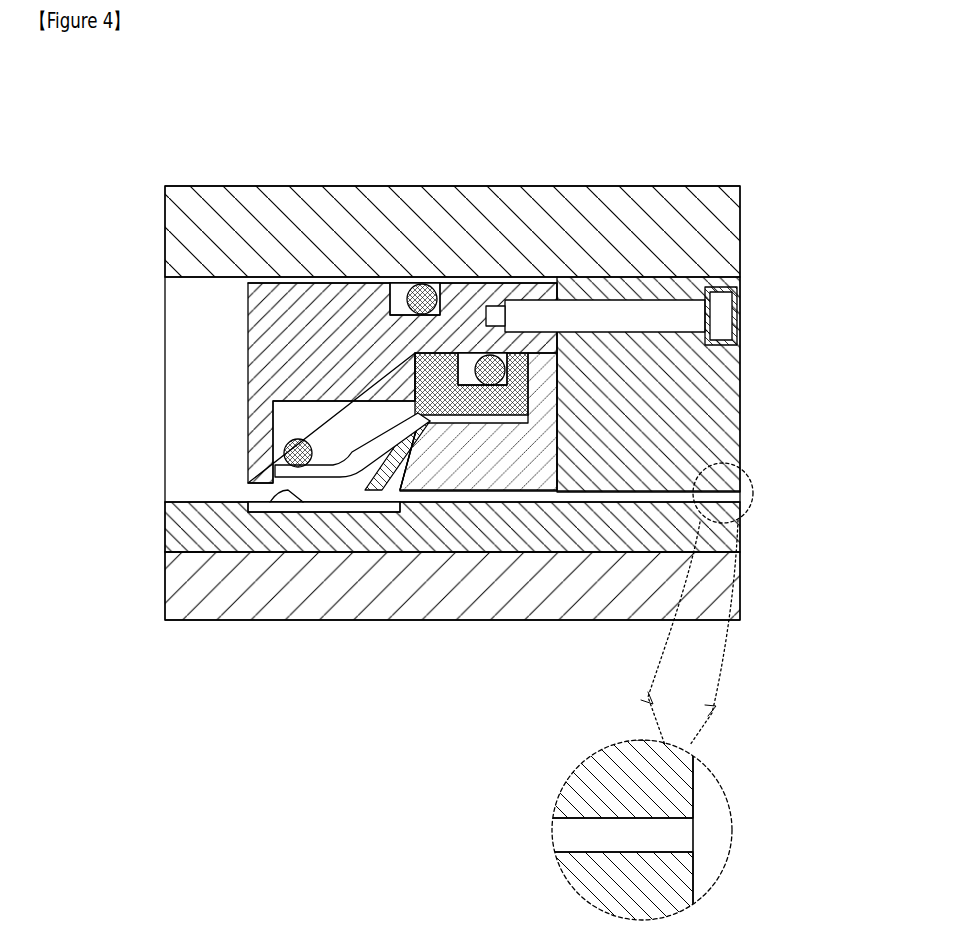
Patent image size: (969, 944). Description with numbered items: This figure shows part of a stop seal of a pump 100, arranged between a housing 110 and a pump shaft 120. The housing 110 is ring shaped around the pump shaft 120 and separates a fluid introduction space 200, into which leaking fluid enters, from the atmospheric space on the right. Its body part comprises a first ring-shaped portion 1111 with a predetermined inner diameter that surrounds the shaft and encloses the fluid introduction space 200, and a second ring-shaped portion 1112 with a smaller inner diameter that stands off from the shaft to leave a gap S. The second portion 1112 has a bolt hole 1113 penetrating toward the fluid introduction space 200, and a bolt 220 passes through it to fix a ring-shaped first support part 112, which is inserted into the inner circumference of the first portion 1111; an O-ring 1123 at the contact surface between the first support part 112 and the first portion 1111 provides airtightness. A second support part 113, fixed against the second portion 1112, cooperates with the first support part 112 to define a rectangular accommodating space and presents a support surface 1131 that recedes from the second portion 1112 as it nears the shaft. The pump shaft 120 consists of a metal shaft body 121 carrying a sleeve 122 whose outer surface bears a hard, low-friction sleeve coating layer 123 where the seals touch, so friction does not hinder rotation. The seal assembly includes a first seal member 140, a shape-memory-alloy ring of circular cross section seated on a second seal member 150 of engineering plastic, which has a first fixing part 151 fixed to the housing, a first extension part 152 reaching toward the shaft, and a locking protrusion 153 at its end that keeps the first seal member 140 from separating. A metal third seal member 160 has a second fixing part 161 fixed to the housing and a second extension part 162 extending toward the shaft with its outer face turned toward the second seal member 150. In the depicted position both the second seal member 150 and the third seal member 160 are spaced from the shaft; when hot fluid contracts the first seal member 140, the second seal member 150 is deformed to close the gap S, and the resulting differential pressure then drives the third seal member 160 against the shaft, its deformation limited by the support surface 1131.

The pump 100 is at (747, 157).
The housing 110 is at (740, 245).
The first ring-shaped portion 1111 is at (403, 212).
The second ring-shaped portion 1112 is at (725, 410).
The bolt hole 1113 is at (620, 315).
The O-ring 1123 is at (427, 285).
The first support part 112 is at (313, 297).
The second support part 113 is at (525, 462).
The support surface 1131 is at (405, 472).
The pump shaft 120 is at (740, 595).
The shaft body 121 is at (727, 573).
The sleeve 122 is at (623, 533).
The sleeve coating layer 123 is at (272, 503).
The first seal member 140 is at (286, 447).
The second seal member 150 is at (100, 318).
The first fixing part 151 is at (413, 370).
The first extension part 152 is at (373, 437).
The locking protrusion 153 is at (275, 463).
The third seal member 160 is at (515, 678).
The second fixing part 161 is at (478, 402).
The second extension part 162 is at (416, 444).
The fluid introduction space 200 is at (195, 479).
The bolt 220 is at (722, 315).
The gap S is at (673, 844).